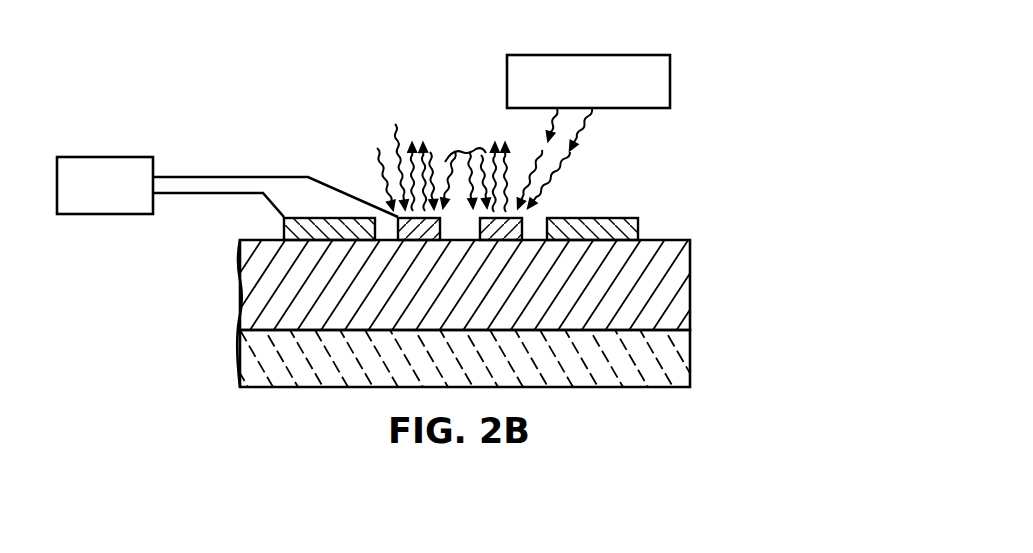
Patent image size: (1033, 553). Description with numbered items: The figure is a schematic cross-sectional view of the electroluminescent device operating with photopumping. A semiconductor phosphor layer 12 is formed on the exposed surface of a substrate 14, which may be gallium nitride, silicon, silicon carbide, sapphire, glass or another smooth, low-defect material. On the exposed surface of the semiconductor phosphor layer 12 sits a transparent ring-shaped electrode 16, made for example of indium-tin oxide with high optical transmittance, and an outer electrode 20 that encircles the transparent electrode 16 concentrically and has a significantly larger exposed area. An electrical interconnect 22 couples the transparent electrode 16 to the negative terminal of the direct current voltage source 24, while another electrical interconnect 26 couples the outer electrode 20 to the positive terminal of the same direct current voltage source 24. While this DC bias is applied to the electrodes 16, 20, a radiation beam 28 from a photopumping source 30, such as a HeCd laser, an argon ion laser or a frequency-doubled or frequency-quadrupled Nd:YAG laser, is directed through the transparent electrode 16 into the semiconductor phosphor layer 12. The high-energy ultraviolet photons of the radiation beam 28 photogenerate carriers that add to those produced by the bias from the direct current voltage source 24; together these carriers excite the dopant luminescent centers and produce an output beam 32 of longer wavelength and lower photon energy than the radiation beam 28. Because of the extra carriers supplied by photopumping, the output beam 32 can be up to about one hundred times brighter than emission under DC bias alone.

The semiconductor phosphor layer 12 is at (688, 286).
The substrate 14 is at (688, 364).
The transparent electrode 16 is at (533, 214).
The outer electrode 20 is at (629, 217).
The electrical interconnect 22 is at (202, 177).
The direct current voltage source 24 is at (86, 156).
The electrical interconnect 26 is at (200, 195).
The radiation beam 28 is at (373, 163).
The photopumping source 30 is at (600, 55).
The output beam 32 is at (396, 124).